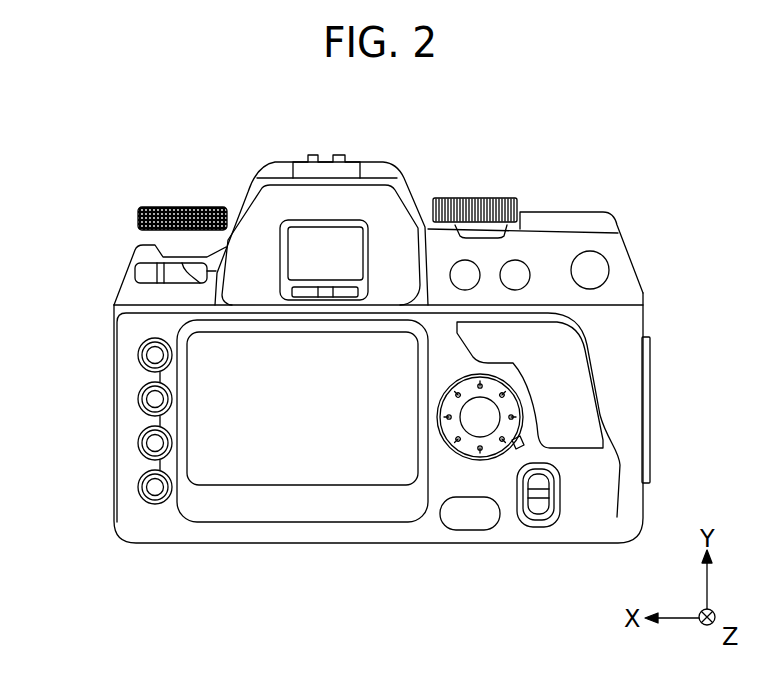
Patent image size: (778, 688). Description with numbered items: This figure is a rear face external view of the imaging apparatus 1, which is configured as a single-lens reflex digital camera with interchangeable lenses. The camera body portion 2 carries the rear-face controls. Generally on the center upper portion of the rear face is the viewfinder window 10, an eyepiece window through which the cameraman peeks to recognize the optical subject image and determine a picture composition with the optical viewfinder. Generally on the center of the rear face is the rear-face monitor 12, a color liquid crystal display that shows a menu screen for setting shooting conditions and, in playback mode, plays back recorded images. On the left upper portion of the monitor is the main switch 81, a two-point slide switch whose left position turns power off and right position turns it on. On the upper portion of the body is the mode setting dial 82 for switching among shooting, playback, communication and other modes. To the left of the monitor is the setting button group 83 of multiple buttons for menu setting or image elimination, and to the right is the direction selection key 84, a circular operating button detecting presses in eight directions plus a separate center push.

The imaging apparatus 1 is at (612, 141).
The camera body portion 2 is at (628, 354).
The viewfinder window 10 is at (330, 240).
The rear-face monitor 12 is at (246, 458).
The main switch 81 is at (133, 272).
The mode setting dial 82 is at (475, 198).
The setting button group 83 is at (102, 347).
The direction selection key 84 is at (462, 456).